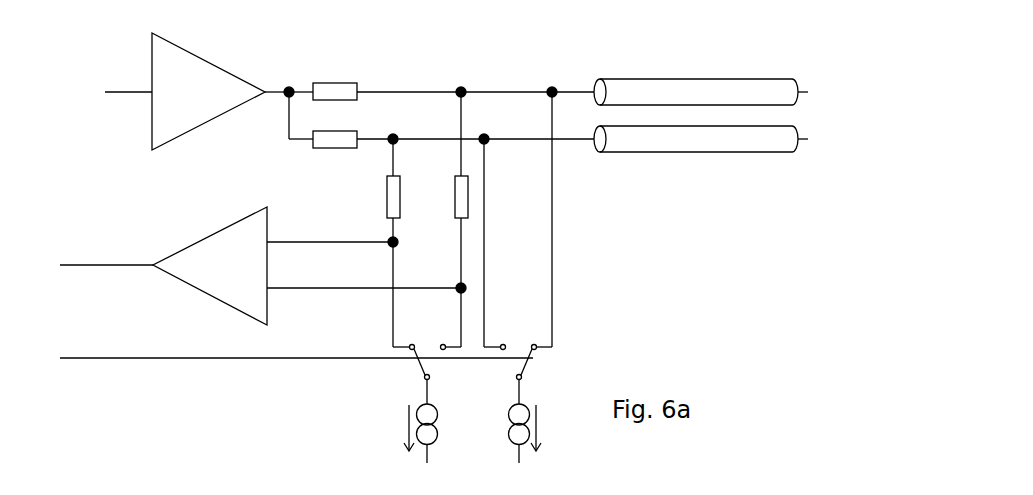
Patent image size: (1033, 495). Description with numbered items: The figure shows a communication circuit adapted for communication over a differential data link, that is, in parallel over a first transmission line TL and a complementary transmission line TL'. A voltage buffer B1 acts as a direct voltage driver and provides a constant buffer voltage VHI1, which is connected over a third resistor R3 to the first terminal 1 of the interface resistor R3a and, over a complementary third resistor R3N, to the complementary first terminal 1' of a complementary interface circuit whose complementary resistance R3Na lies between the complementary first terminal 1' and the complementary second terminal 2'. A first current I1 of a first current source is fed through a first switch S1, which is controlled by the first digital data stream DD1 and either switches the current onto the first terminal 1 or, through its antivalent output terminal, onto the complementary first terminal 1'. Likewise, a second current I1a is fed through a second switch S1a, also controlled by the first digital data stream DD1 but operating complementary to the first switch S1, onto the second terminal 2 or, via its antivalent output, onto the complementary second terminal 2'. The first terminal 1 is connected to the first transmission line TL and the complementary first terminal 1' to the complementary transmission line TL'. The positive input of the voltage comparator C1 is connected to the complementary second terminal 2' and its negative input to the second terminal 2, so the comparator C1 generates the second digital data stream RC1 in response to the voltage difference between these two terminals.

The constant buffer voltage VHI1 is at (95, 92).
The voltage buffer B1 is at (220, 91).
The third resistor R3 is at (375, 81).
The complementary third resistor R3N is at (341, 120).
The interface resistor R3a is at (443, 190).
The complementary resistance R3Na is at (366, 190).
The first terminal 1 is at (504, 80).
The complementary first terminal 1' is at (436, 129).
The second terminal 2 is at (366, 280).
The complementary second terminal 2' is at (332, 235).
The first transmission line TL is at (701, 79).
The complementary transmission line TL' is at (701, 129).
The voltage comparator C1 is at (210, 266).
The second digital data stream RC1 is at (84, 265).
The first digital data stream DD1 is at (274, 358).
The second switch S1a is at (427, 311).
The first switch S1 is at (518, 236).
The second current I1a is at (401, 421).
The first current I1 is at (537, 421).